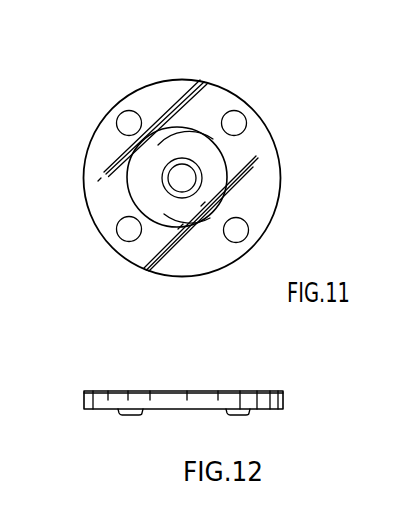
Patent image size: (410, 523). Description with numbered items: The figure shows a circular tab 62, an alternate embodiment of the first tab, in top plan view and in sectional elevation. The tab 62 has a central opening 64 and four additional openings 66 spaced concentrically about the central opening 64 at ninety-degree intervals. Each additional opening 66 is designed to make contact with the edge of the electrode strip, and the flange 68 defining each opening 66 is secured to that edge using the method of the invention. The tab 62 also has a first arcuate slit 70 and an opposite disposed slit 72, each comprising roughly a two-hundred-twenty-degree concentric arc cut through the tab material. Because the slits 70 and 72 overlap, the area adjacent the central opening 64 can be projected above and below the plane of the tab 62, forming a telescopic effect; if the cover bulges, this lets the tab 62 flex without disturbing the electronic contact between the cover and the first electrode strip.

In FIG. 11, the tab 62 is at (231, 74).
In FIG. 12, the tab 62 is at (293, 385).
In FIG. 11, the central opening 64 is at (192, 185).
In FIG. 11, the additional openings 66 is at (127, 123).
In FIG. 12, the flange 68 is at (122, 415).
In FIG. 11, the first arcuate slit 70 is at (176, 122).
In FIG. 11, the opposite disposed slit 72 is at (225, 176).